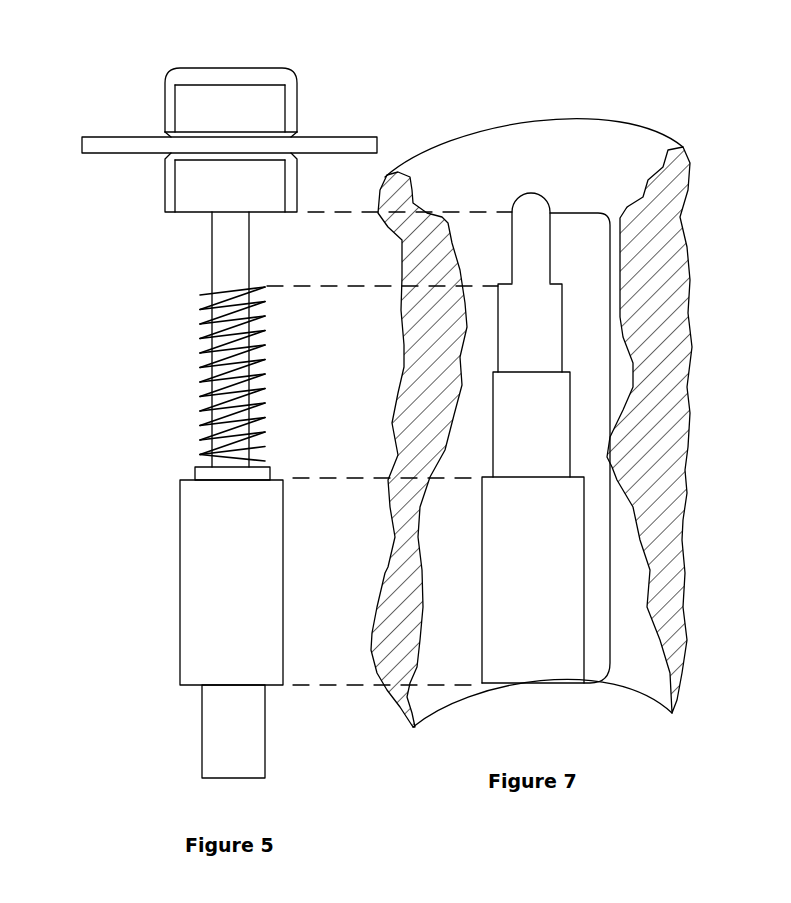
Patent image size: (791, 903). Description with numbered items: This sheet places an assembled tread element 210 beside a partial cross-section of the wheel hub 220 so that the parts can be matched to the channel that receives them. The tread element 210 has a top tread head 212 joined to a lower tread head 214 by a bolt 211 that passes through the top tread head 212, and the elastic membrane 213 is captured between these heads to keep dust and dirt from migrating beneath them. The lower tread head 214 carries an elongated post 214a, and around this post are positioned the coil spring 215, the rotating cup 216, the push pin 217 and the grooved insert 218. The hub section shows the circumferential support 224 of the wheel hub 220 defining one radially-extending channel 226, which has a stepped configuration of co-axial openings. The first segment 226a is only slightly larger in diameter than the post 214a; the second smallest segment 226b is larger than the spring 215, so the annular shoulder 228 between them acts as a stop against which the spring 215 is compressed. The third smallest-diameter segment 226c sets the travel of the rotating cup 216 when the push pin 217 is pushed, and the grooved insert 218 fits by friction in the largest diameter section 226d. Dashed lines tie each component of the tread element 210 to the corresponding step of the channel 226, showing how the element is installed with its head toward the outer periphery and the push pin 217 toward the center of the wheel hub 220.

In FIG. 5, the tread element 210 is at (297, 64).
In FIG. 5, the bolt 211 is at (178, 77).
In FIG. 5, the top tread head 212 is at (183, 105).
In FIG. 5, the elastic membrane 213 is at (90, 147).
In FIG. 5, the lower tread head 214 is at (190, 187).
In FIG. 5, the elongated post 214a is at (238, 247).
In FIG. 5, the coil spring 215 is at (208, 352).
In FIG. 5, the rotating cup 216 is at (193, 475).
In FIG. 5, the push pin 217 is at (222, 738).
In FIG. 5, the grooved insert 218 is at (203, 582).
In FIG. 7, the wheel hub 220 is at (531, 404).
In FIG. 7, the circumferential support 224 is at (662, 255).
In FIG. 7, the channel 226 is at (612, 436).
In FIG. 7, the first segment 226a is at (549, 246).
In FIG. 7, the second smallest segment 226b is at (548, 328).
In FIG. 7, the third smallest-diameter segment 226c is at (549, 426).
In FIG. 7, the largest diameter section 226d is at (550, 566).
In FIG. 7, the annular shoulder 228 is at (563, 287).